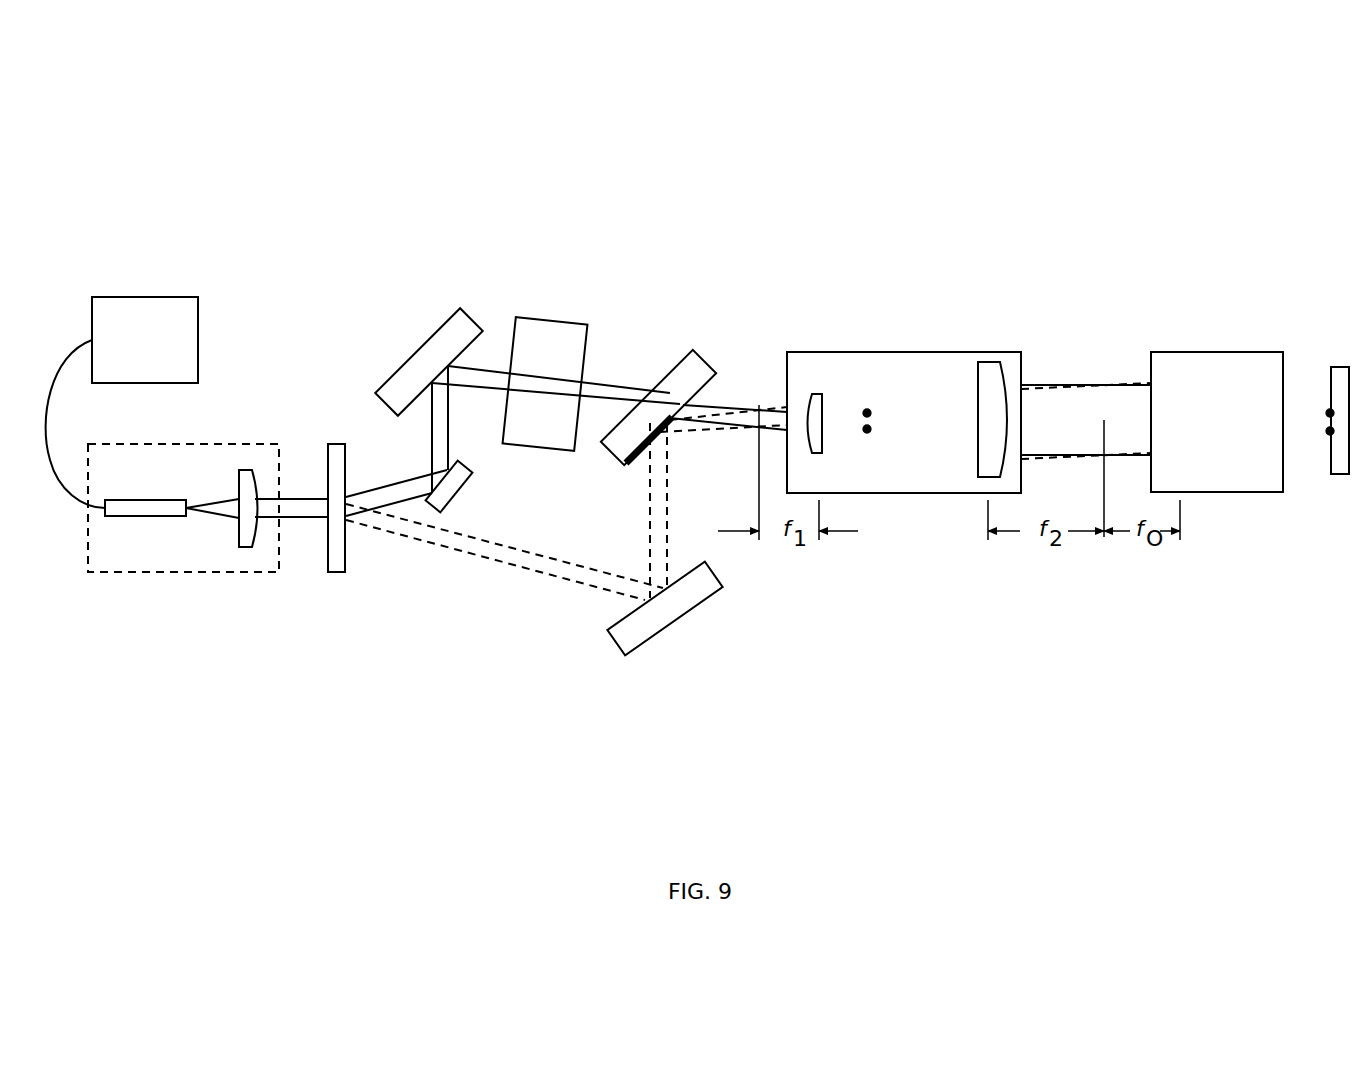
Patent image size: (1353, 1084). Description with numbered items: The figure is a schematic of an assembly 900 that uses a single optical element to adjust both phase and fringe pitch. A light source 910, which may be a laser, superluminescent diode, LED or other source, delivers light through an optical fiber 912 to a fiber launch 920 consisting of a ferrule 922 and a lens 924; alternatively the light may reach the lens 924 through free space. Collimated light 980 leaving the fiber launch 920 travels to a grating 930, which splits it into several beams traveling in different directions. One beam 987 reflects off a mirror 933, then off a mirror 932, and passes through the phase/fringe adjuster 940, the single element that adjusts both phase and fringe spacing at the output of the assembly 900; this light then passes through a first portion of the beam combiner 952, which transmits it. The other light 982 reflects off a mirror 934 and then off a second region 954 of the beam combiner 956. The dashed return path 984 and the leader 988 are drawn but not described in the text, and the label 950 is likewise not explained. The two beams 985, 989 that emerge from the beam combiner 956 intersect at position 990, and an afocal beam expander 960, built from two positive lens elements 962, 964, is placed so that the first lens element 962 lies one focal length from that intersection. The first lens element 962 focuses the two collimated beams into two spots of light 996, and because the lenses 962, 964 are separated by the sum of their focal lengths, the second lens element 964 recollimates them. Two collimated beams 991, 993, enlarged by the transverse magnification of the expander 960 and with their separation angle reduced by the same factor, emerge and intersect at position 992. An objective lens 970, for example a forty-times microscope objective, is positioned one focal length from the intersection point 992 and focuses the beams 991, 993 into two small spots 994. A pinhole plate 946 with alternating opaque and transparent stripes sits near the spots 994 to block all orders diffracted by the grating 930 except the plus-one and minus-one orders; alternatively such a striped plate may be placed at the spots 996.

The assembly 900 is at (370, 170).
The light source 910 is at (105, 297).
The optical fiber 912 is at (48, 427).
The fiber launch 920 is at (188, 645).
The ferrule 922 is at (145, 517).
The lens 924 is at (258, 535).
The grating 930 is at (335, 572).
The mirror 932 is at (418, 347).
The mirror 933 is at (463, 487).
The mirror 934 is at (650, 637).
The phase/fringe adjuster 940 is at (553, 318).
The pinhole plate 946 is at (1341, 474).
The beam splitter assembly 950 is at (741, 268).
The beam combiner 952 is at (703, 390).
The second region 954 is at (633, 460).
The beam combiner 956 is at (690, 352).
The afocal beam expander 960 is at (913, 578).
The first lens element 962 is at (818, 392).
The second lens element 964 is at (988, 362).
The objective lens 970 is at (1218, 352).
The collimated light 980 is at (303, 497).
The light 982 is at (405, 535).
The reflected beam 984 is at (650, 540).
The beam of light 985 is at (711, 437).
The beam 987 is at (400, 483).
The beam 988 is at (637, 383).
The beam of light 989 is at (717, 405).
The position 990 is at (760, 407).
The collimated beam of light 991 is at (1050, 383).
The position 992 is at (1104, 413).
The collimated beam of light 993 is at (1137, 383).
The spots 994 is at (1312, 398).
The spots of light 996 is at (868, 390).